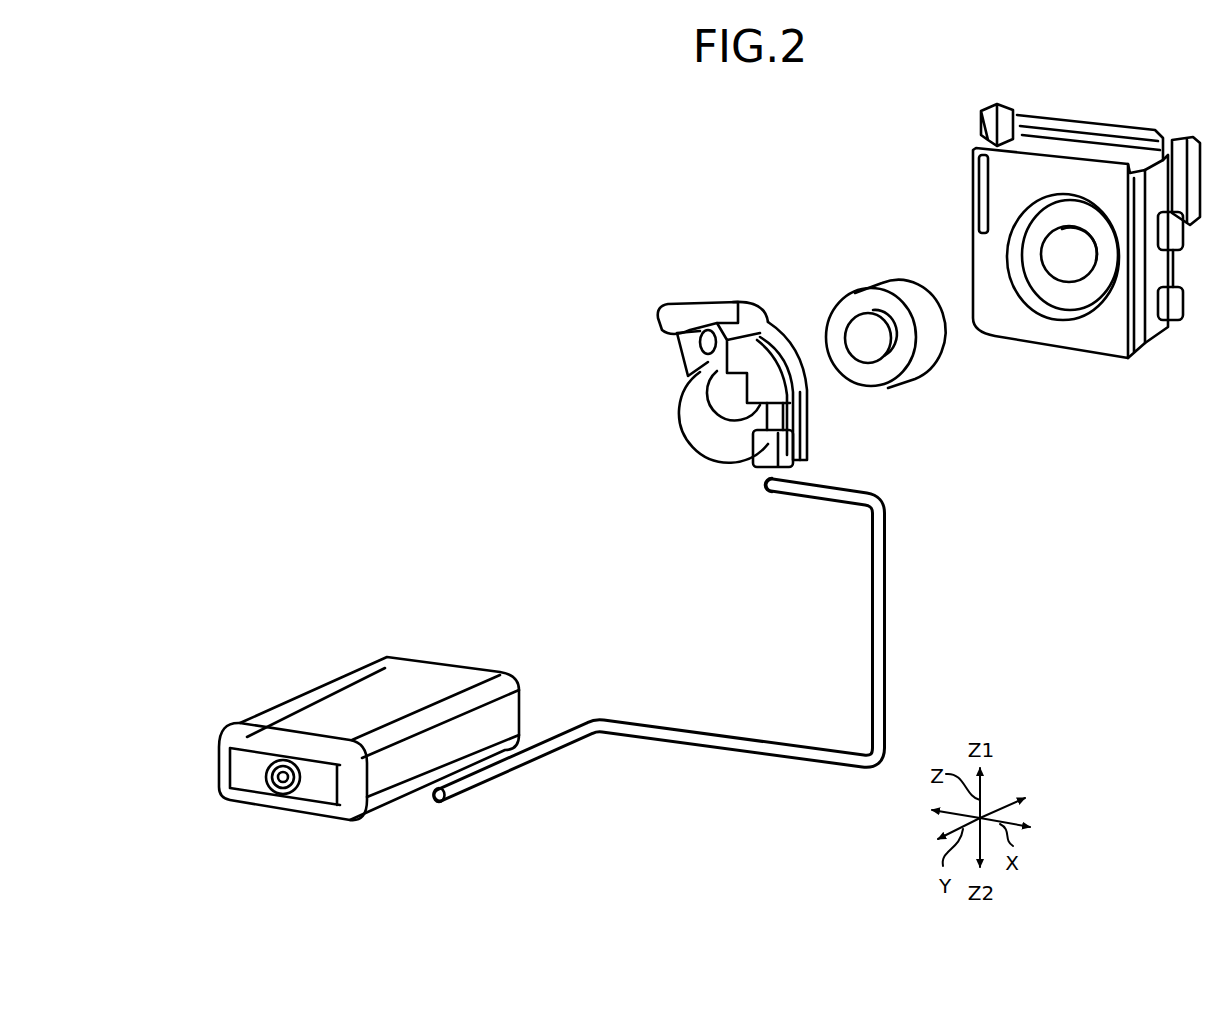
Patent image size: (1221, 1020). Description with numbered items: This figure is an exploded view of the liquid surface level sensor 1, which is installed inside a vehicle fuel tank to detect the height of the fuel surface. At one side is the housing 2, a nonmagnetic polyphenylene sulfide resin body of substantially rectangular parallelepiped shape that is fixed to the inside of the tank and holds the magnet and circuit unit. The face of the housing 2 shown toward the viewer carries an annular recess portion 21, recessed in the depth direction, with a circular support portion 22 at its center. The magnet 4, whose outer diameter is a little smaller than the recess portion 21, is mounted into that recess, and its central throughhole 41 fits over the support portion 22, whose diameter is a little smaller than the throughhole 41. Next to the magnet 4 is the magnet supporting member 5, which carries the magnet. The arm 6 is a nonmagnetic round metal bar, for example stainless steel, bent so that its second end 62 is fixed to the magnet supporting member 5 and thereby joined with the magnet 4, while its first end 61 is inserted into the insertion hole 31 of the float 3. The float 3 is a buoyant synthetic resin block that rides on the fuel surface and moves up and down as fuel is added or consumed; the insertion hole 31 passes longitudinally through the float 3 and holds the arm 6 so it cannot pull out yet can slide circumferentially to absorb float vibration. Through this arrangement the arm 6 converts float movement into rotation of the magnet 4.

The liquid surface level sensor 1 is at (645, 272).
The housing 2 is at (987, 298).
The recess portion 21 is at (1050, 213).
The support portion 22 is at (1068, 268).
The float 3 is at (332, 680).
The insertion hole 31 is at (282, 790).
The magnet 4 is at (870, 285).
The throughhole 41 is at (869, 353).
The magnet supporting member 5 is at (683, 413).
The arm 6 is at (657, 718).
The first end 61 is at (482, 786).
The second end 62 is at (785, 497).